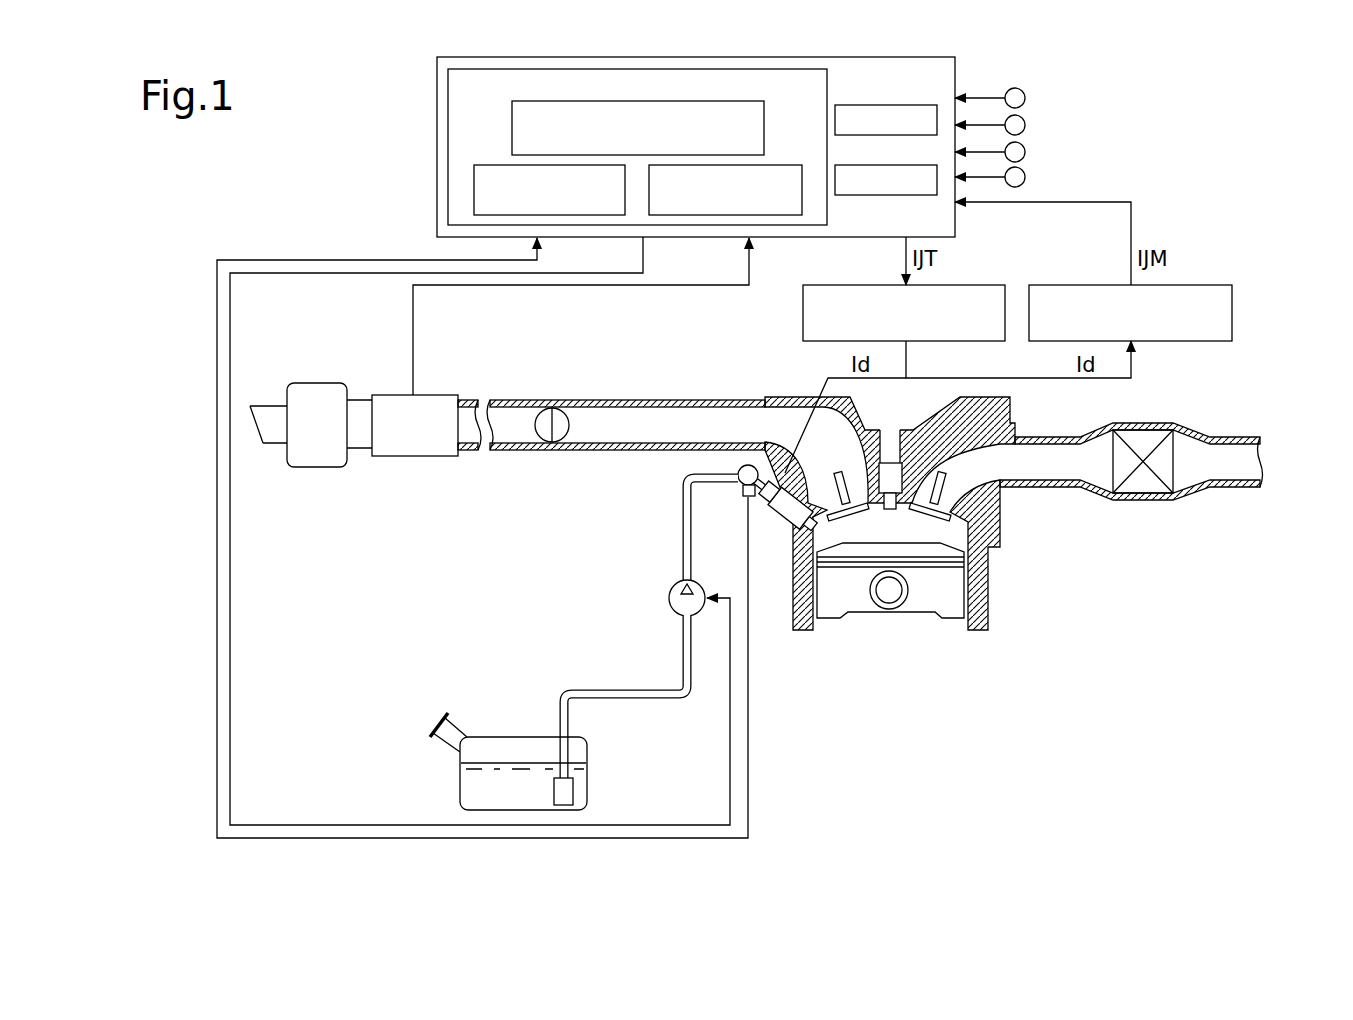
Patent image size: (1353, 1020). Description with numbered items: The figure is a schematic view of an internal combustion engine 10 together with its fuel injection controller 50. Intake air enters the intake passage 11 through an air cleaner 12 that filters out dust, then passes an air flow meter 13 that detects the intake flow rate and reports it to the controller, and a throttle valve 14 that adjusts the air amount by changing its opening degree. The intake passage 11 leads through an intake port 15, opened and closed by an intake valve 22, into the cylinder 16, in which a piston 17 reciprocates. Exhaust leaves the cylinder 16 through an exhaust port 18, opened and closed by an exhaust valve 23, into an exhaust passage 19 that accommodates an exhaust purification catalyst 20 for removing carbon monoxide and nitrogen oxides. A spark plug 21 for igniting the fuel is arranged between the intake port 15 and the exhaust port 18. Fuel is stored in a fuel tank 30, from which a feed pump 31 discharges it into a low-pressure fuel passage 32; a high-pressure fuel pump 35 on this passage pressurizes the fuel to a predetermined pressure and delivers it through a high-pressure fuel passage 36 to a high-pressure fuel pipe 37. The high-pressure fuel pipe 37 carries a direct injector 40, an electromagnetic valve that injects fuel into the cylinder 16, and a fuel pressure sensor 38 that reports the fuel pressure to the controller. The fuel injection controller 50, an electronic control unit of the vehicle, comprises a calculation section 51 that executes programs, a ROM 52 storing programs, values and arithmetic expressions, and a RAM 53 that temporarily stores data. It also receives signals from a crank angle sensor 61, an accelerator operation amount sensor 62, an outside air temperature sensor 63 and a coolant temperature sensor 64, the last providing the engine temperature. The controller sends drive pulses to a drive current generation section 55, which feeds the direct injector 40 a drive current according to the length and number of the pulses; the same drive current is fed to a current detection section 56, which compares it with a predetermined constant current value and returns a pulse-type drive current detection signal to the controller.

The internal combustion engine 10 is at (1042, 690).
The intake passage 11 is at (495, 411).
The air cleaner 12 is at (316, 383).
The air flow meter 13 is at (440, 396).
The throttle valve 14 is at (566, 421).
The intake port 15 is at (823, 422).
The cylinder 16 is at (984, 550).
The piston 17 is at (828, 618).
The exhaust port 18 is at (997, 470).
The exhaust passage 19 is at (1058, 437).
The exhaust purification catalyst 20 is at (1178, 448).
The spark plug 21 is at (893, 461).
The intake valve 22 is at (812, 535).
The exhaust valve 23 is at (985, 519).
The fuel tank 30 is at (460, 785).
The feed pump 31 is at (573, 795).
The low-pressure fuel passage 32 is at (648, 698).
The high-pressure fuel pump 35 is at (673, 588).
The high-pressure fuel passage 36 is at (683, 524).
The high-pressure fuel pipe 37 is at (748, 465).
The fuel pressure sensor 38 is at (742, 491).
The direct injector 40 is at (769, 502).
The fuel injection controller 50 is at (437, 70).
The calculation section 51 is at (448, 130).
The ROM 52 is at (885, 105).
The RAM 53 is at (885, 165).
The drive current generation section 55 is at (953, 285).
The current detection section 56 is at (1176, 285).
The crank angle sensor 61 is at (1025, 98).
The accelerator operation amount sensor 62 is at (1025, 125).
The outside air temperature sensor 63 is at (1025, 152).
The coolant temperature sensor 64 is at (1025, 177).